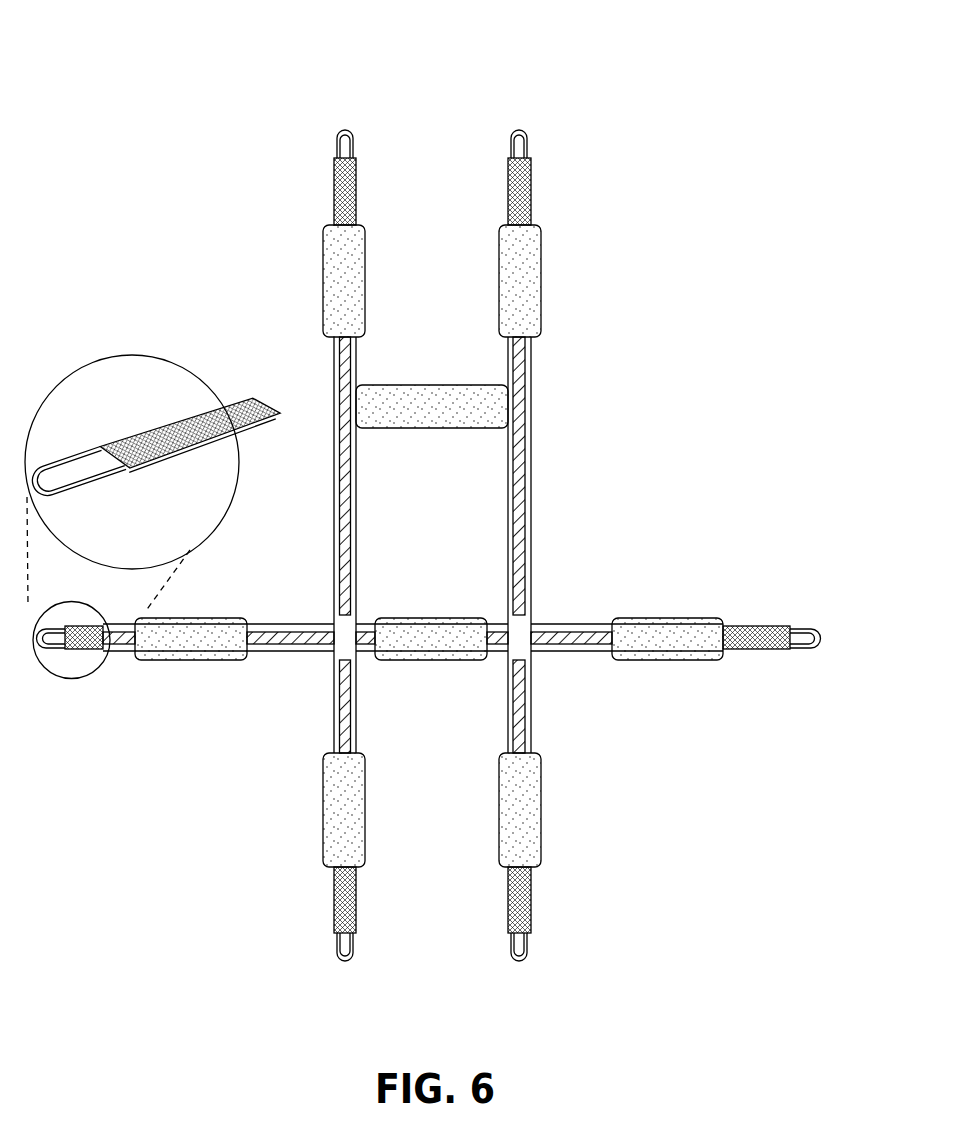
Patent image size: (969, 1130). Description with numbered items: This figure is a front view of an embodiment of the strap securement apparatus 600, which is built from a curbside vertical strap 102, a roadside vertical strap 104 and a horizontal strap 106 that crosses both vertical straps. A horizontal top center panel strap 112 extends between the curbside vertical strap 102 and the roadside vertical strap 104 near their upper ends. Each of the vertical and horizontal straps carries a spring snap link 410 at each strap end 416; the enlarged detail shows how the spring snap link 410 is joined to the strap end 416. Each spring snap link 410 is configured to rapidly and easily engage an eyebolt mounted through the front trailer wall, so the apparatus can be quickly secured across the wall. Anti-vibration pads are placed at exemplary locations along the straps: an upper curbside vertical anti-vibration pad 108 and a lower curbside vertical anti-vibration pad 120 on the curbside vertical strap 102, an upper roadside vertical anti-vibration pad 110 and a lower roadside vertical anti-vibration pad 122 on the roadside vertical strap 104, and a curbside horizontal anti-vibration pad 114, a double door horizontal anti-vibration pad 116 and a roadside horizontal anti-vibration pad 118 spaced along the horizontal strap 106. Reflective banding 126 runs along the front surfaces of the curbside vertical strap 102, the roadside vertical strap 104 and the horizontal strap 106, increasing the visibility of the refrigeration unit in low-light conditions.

The strap securement apparatus 600 is at (650, 66).
The curbside vertical strap 102 is at (337, 442).
The roadside vertical strap 104 is at (532, 465).
The horizontal strap 106 is at (318, 612).
The upper curbside vertical anti-vibration pad 108 is at (322, 282).
The upper roadside vertical anti-vibration pad 110 is at (540, 277).
The horizontal top center panel strap 112 is at (434, 385).
The curbside horizontal anti-vibration pad 114 is at (190, 662).
The double door horizontal anti-vibration pad 116 is at (432, 661).
The roadside horizontal anti-vibration pad 118 is at (663, 661).
The lower curbside vertical anti-vibration pad 120 is at (323, 800).
The lower roadside vertical anti-vibration pad 122 is at (540, 802).
The reflective banding 126 is at (340, 378).
The spring snap link 410 is at (333, 140).
The strap end 416 is at (203, 484).